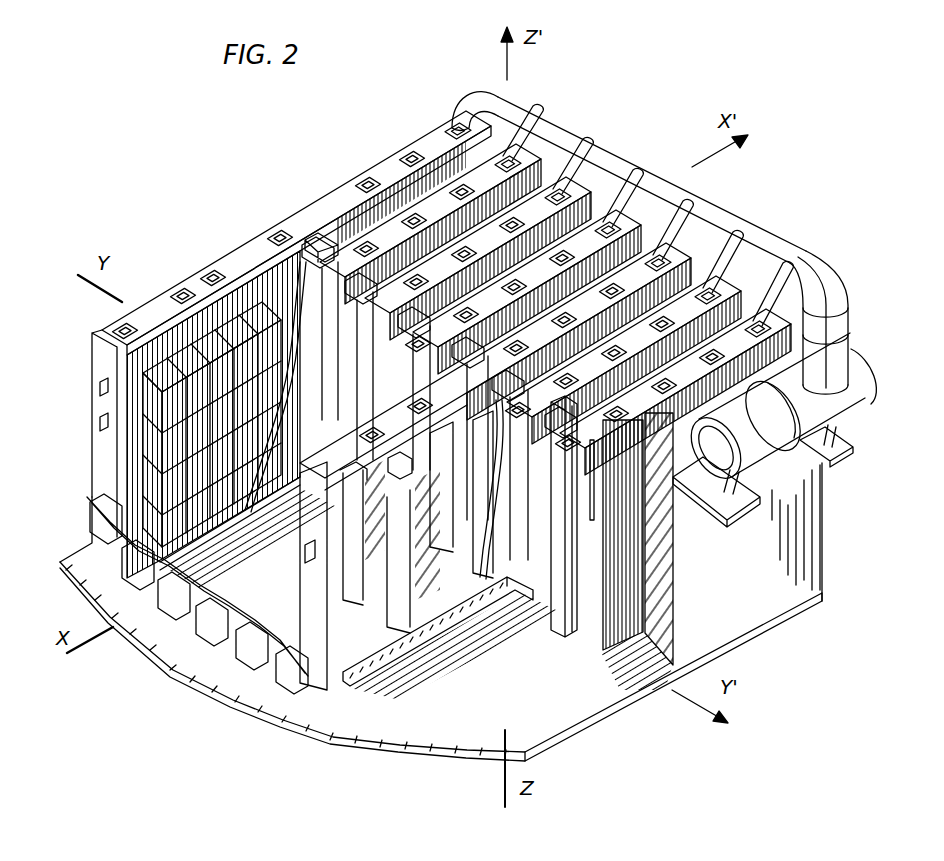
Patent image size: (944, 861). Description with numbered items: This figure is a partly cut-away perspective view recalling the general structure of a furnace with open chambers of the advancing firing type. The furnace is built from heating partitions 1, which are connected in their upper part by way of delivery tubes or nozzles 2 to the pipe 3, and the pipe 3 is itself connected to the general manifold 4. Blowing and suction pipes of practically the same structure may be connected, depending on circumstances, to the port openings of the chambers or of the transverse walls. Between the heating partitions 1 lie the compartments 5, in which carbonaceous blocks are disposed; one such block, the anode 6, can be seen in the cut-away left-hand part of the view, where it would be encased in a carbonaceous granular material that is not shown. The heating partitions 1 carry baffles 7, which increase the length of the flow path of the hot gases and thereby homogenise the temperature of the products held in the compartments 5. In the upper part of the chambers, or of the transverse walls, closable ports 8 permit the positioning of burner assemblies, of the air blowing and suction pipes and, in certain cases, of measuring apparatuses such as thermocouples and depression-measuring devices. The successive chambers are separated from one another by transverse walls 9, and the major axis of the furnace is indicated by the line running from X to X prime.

The partitions 1 is at (388, 477).
The delivery tubes or nozzles 2 is at (543, 122).
The pipe 3 is at (600, 150).
The general manifold 4 is at (857, 405).
The compartments 5 is at (250, 275).
The anode 6 is at (177, 370).
The baffles 7 is at (397, 580).
The closable ports 8 is at (212, 275).
The transverse walls 9 is at (298, 232).